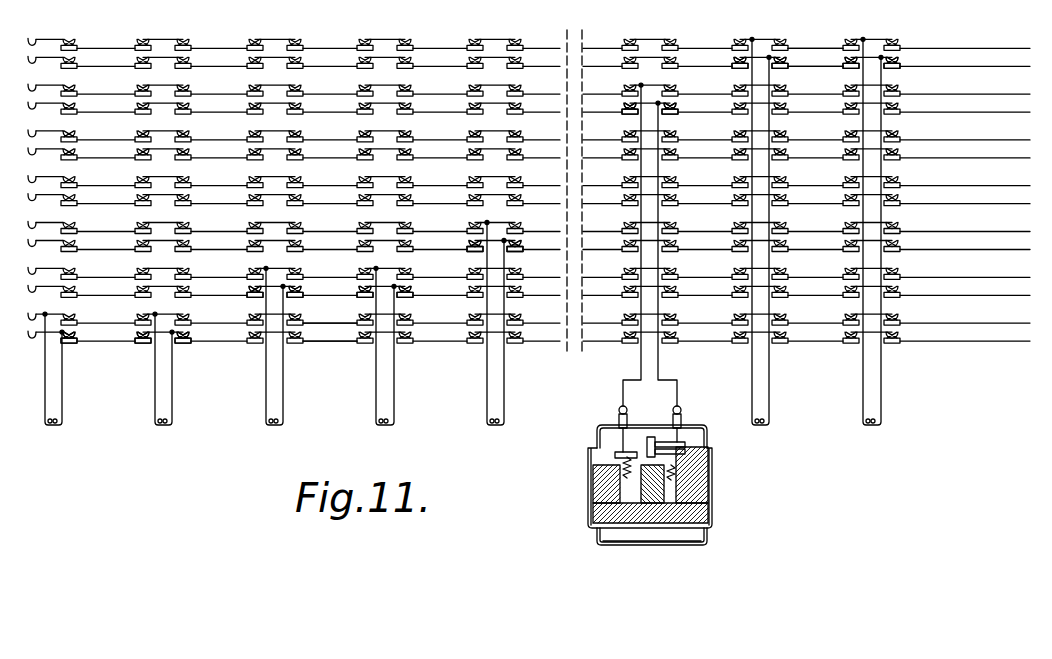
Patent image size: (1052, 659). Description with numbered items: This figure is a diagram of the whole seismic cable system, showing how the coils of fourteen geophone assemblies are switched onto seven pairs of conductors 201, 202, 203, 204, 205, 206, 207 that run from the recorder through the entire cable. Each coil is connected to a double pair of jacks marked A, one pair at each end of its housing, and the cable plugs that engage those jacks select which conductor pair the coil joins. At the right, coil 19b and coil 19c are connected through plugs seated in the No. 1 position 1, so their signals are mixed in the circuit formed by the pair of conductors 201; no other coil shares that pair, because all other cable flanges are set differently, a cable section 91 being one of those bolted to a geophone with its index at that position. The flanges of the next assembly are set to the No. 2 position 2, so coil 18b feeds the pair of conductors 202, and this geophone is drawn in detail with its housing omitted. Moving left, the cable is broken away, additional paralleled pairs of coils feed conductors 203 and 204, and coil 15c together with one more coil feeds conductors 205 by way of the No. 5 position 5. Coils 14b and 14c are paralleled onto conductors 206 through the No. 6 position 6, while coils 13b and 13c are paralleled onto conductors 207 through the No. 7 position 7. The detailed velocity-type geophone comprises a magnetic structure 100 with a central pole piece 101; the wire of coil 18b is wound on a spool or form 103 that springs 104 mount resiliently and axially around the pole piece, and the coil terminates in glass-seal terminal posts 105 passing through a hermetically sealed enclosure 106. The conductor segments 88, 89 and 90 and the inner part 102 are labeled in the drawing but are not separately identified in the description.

The pair of conductors 201 is at (978, 60).
The pair of conductors 202 is at (978, 106).
The pair of conductors 203 is at (978, 152).
The pair of conductors 204 is at (978, 197).
The pair of conductors 205 is at (978, 243).
The pair of conductors 206 is at (978, 289).
The pair of conductors 207 is at (978, 335).
The No. 1 position 1 is at (813, 63).
The No. 2 position 2 is at (646, 244).
The No. 5 position 5 is at (493, 243).
The No. 6 position 6 is at (329, 289).
The No. 7 position 7 is at (133, 335).
The geophone coil 13c is at (50, 427).
The geophone coil 13b is at (160, 427).
The geophone coil 14c is at (271, 427).
The geophone coil 14b is at (381, 427).
The geophone coil 15c is at (492, 427).
The geophone coil 19c is at (760, 427).
The geophone coil 19b is at (871, 427).
The conductor 88 is at (812, 47).
The conductor 89 is at (818, 67).
The conductor 90 is at (325, 322).
The cable section 91 is at (337, 342).
The magnetic structure 100 is at (704, 510).
The central pole piece 101 is at (644, 491).
The core block 102 is at (665, 485).
The spool or form 103 is at (618, 455).
The springs 104 is at (697, 441).
The glass-seal terminal posts 105 is at (674, 408).
The hermetically sealed enclosure 106 is at (664, 546).
The geophone coil 18b is at (675, 476).